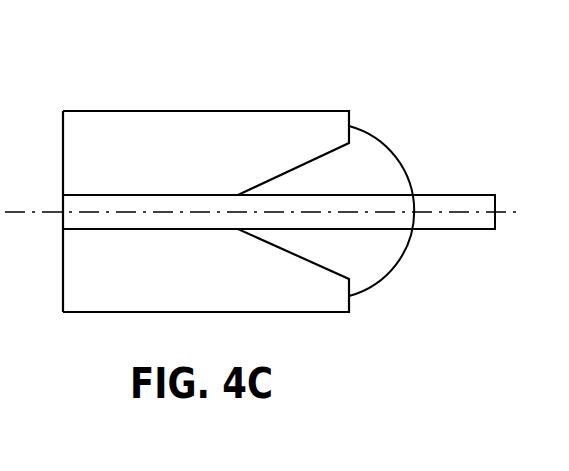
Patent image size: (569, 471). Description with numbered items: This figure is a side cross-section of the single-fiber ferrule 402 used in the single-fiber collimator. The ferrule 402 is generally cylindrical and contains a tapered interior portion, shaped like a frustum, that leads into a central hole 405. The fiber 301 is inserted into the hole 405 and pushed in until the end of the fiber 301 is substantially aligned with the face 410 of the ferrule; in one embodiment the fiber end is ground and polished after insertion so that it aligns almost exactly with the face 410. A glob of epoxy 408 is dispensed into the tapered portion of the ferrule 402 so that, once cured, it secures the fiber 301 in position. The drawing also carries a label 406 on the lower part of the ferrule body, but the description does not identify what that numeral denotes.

The single-fiber ferrule 402 is at (253, 200).
The hole 405 is at (79, 194).
The face of the ferrule 410 is at (62, 293).
The ferrule body 406 is at (302, 302).
The glob of epoxy 408 is at (393, 273).
The fiber 301 is at (474, 220).